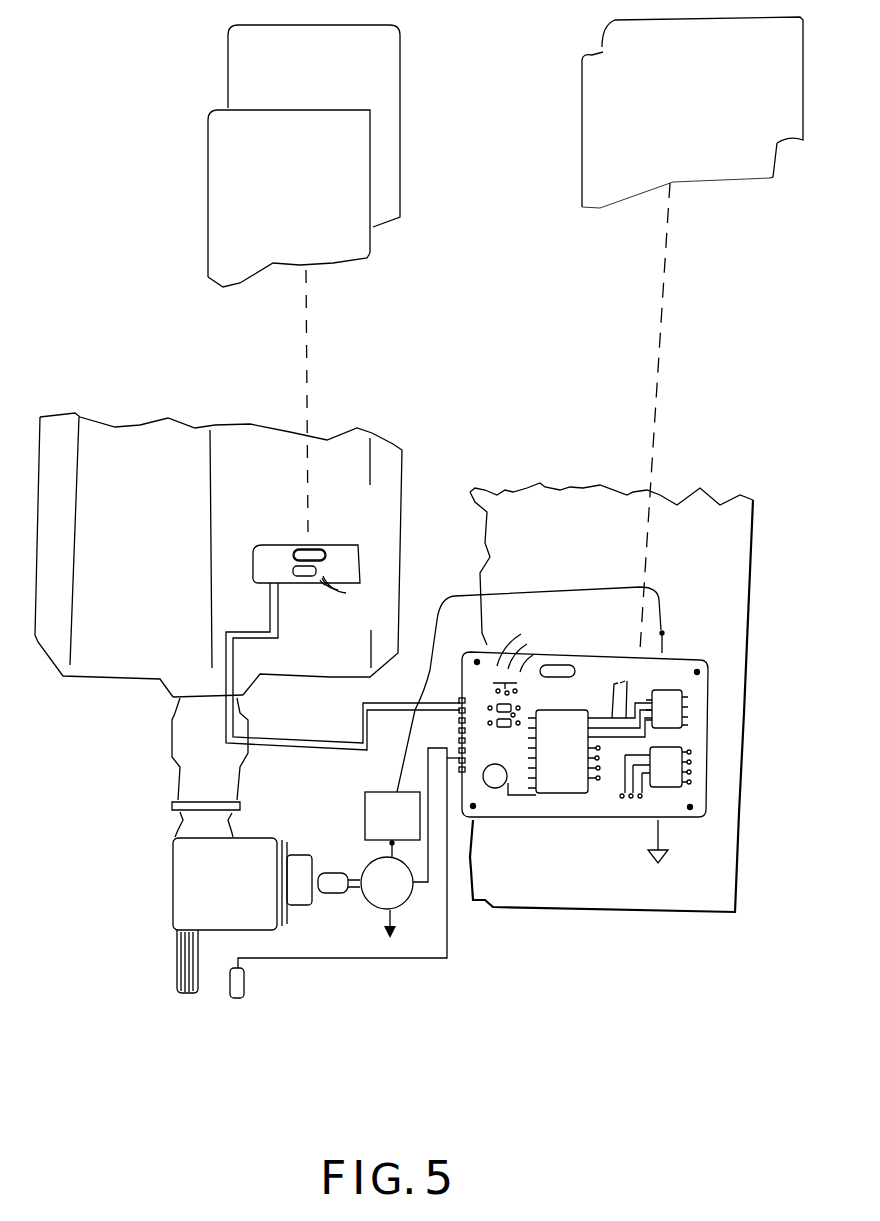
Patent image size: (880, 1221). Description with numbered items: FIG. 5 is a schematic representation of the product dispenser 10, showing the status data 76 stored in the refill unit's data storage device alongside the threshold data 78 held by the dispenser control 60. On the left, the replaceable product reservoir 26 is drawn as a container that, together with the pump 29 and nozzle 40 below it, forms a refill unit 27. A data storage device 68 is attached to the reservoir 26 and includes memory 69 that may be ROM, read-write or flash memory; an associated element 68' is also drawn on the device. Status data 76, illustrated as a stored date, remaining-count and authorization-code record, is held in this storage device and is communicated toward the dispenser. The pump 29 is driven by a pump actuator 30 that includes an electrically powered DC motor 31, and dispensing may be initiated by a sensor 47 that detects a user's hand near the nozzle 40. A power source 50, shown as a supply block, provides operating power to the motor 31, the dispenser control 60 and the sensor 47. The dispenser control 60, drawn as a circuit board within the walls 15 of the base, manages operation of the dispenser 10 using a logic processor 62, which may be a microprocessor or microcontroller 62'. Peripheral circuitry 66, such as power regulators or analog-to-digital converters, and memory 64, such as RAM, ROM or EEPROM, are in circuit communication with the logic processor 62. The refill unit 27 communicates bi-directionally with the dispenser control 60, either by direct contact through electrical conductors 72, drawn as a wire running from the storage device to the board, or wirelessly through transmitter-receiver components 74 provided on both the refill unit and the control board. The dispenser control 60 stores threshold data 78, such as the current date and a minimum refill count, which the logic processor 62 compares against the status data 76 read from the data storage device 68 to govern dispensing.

The product dispenser 10 is at (528, 983).
The walls 15 is at (610, 527).
The product reservoir 26 is at (273, 460).
The refill unit 27 is at (295, 376).
The pump 29 is at (195, 887).
The pump actuator 30 is at (373, 907).
The motor 31 is at (403, 905).
The nozzle 40 is at (182, 977).
The sensor 47 is at (230, 990).
The power source 50 is at (342, 821).
The dispenser control 60 is at (667, 673).
The logic processor 62 is at (590, 788).
The microprocessor or microcontroller 62' is at (611, 824).
The memory 64 is at (667, 777).
The peripheral circuitry 66 is at (665, 713).
The data storage device 68 is at (358, 569).
The sensor element 68' is at (375, 540).
The memory 69 is at (318, 553).
The electrical conductors 72 is at (273, 612).
The wireless transmitter-receiver components 74 is at (297, 568).
The status data 76 is at (208, 128).
The threshold data 78 is at (583, 112).